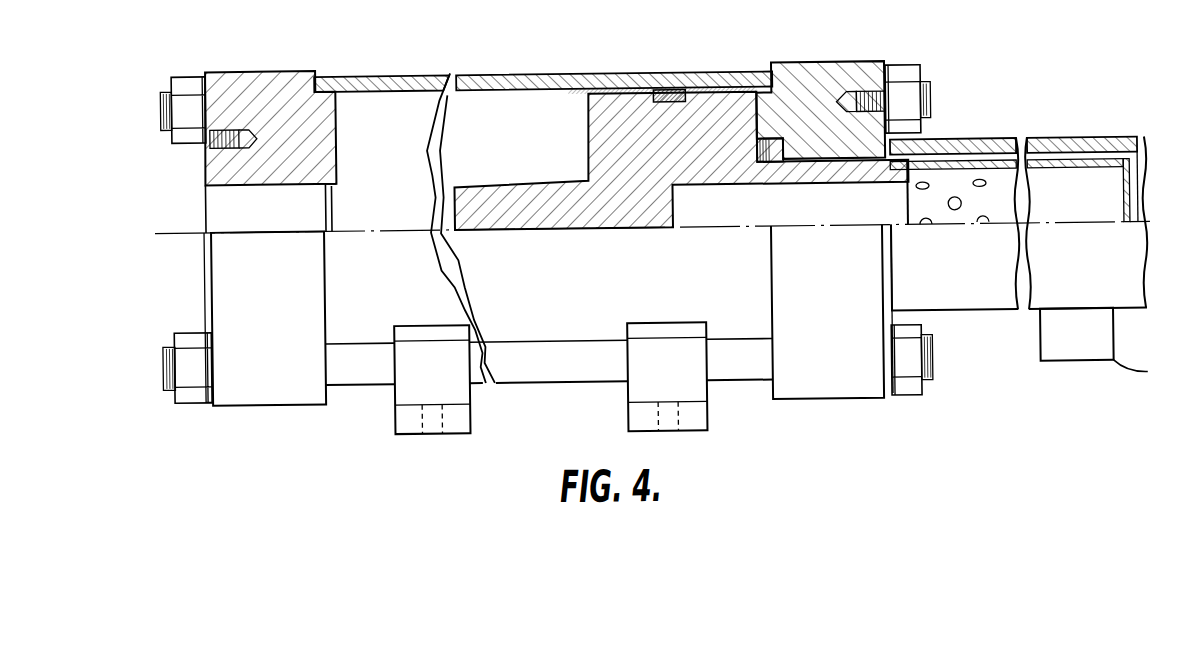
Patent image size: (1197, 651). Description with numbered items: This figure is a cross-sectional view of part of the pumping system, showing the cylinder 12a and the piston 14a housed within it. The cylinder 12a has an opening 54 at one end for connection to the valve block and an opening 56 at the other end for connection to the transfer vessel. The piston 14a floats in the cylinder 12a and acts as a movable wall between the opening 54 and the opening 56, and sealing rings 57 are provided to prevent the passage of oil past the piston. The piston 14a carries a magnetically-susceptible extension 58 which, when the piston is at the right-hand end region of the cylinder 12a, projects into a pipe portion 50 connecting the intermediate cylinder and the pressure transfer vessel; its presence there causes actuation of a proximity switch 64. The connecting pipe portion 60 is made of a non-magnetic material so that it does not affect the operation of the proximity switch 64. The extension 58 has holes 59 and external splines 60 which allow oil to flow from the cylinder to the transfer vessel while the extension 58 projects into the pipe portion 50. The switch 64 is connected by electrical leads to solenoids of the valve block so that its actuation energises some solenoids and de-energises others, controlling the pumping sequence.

The cylinder 12a is at (520, 327).
The piston 14a is at (622, 92).
The pipe portion 50 is at (973, 301).
The opening 54 is at (214, 205).
The opening 56 is at (828, 108).
The sealing rings 57 is at (671, 90).
The magnetically-susceptible extension 58 is at (1067, 165).
The holes 59 is at (989, 223).
The external splines 60 is at (803, 160).
The proximity switch 64 is at (1082, 355).